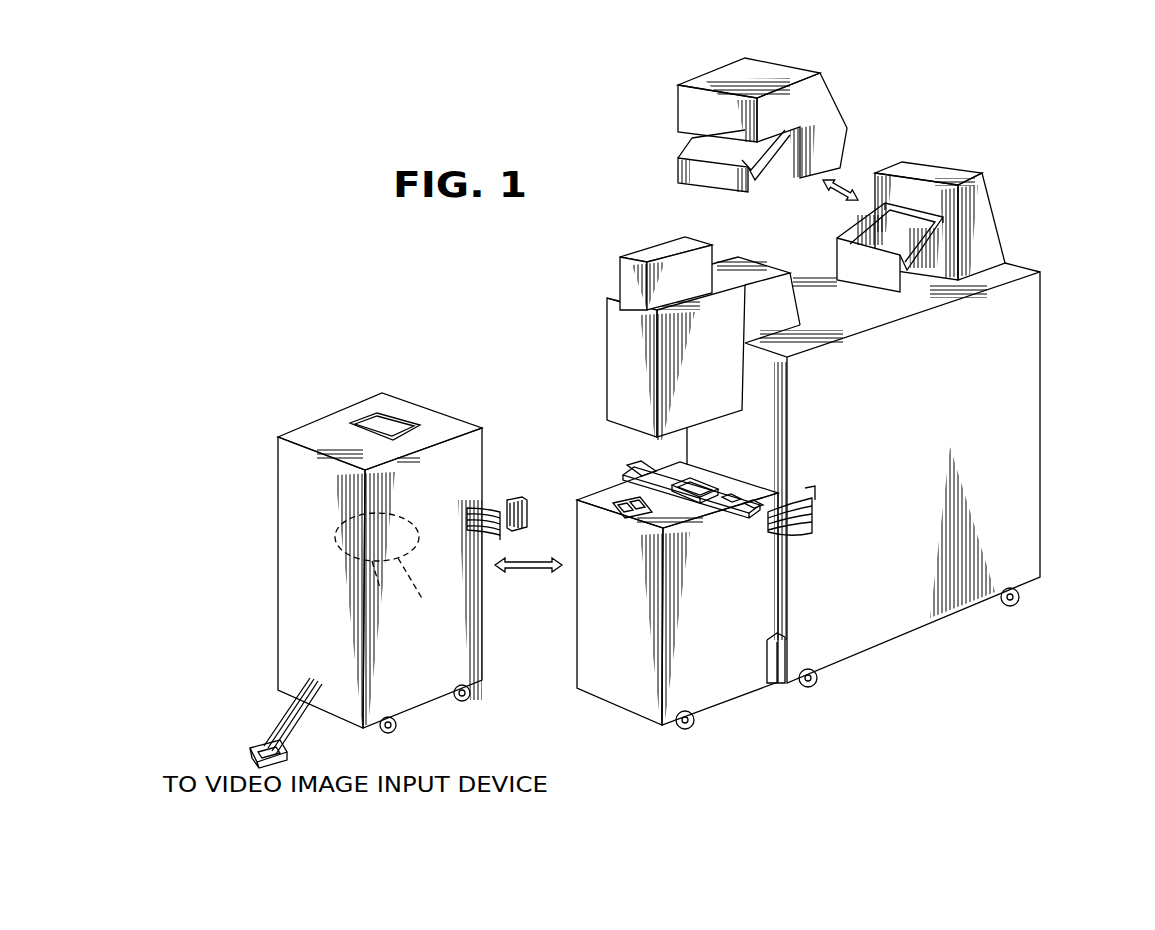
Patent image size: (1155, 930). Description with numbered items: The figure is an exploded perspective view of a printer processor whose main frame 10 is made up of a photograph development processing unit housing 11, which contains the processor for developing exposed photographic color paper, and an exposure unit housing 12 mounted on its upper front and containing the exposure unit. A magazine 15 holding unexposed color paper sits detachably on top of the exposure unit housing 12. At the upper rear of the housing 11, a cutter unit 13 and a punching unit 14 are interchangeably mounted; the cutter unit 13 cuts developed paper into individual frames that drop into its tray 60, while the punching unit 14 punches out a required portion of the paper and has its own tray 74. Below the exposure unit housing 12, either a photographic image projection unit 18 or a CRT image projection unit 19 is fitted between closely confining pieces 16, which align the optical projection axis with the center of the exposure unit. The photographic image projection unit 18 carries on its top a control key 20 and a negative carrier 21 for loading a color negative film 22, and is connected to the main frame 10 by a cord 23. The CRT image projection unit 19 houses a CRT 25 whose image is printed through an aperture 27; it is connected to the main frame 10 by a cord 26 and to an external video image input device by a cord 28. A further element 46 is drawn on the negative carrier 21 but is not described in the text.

The printer processor main frame 10 is at (1048, 460).
The photograph development processing unit housing 11 is at (1025, 362).
The exposure unit housing 12 is at (615, 345).
The cutter unit 13 is at (992, 228).
The punching unit 14 is at (690, 112).
The magazine 15 is at (642, 255).
The closely confining pieces 16 is at (773, 673).
The photographic image projection unit 18 is at (627, 695).
The CRT image projection unit 19 is at (278, 593).
The control key 20 is at (623, 507).
The negative carrier 21 is at (683, 498).
The color negative film 22 is at (638, 468).
The cord 23 is at (795, 540).
The CRT 25 is at (423, 600).
The cord 26 is at (508, 505).
The aperture 27 is at (395, 423).
The cord 28 is at (273, 732).
The holder frame 46 is at (697, 483).
The tray 60 is at (865, 278).
The tray 74 is at (705, 178).